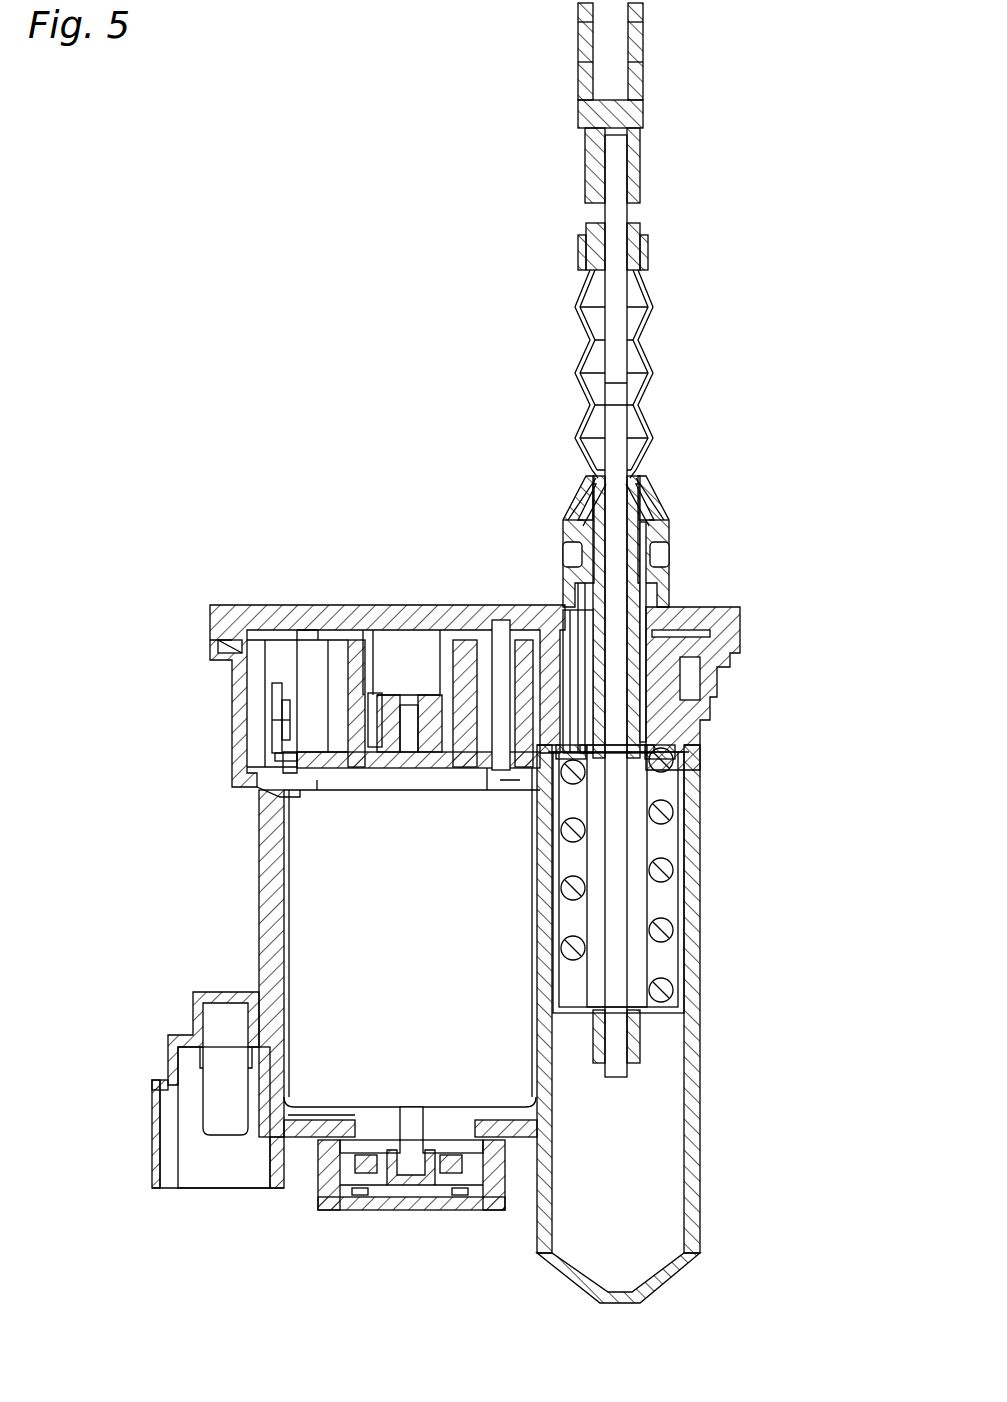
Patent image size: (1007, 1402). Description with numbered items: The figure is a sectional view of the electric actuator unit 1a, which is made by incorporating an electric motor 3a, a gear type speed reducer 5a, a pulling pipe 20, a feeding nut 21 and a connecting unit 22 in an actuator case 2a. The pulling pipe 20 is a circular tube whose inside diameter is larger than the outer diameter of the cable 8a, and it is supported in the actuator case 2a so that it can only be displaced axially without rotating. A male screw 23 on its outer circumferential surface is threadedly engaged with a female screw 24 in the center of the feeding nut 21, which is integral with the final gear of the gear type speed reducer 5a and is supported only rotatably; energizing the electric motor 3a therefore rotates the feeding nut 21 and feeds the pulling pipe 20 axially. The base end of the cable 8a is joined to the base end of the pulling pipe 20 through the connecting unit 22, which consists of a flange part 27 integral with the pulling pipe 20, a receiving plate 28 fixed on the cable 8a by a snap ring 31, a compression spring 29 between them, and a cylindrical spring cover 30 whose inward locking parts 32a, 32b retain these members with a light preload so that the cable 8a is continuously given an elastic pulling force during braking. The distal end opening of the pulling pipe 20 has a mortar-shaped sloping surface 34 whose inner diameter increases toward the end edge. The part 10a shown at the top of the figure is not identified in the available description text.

The electric actuator unit 1a is at (448, 341).
The actuator case 2a is at (263, 828).
The electric motor 3a is at (327, 902).
The gear type speed reducer 5a is at (447, 705).
The cable 8a is at (617, 322).
The coupling 10a is at (632, 104).
The pulling pipe 20 is at (617, 591).
The feeding nut 21 is at (518, 654).
The connecting unit 22 is at (669, 719).
The male screw 23 is at (593, 558).
The female screw 24 is at (633, 678).
The flange part 27 is at (683, 803).
The receiving plate 28 is at (665, 1000).
The compression spring 29 is at (663, 872).
The spring cover 30 is at (695, 927).
The snap ring 31 is at (642, 1057).
The locking part 32a is at (690, 745).
The locking part 32b is at (645, 1050).
The mortar-shaped sloping surface 34 is at (640, 458).